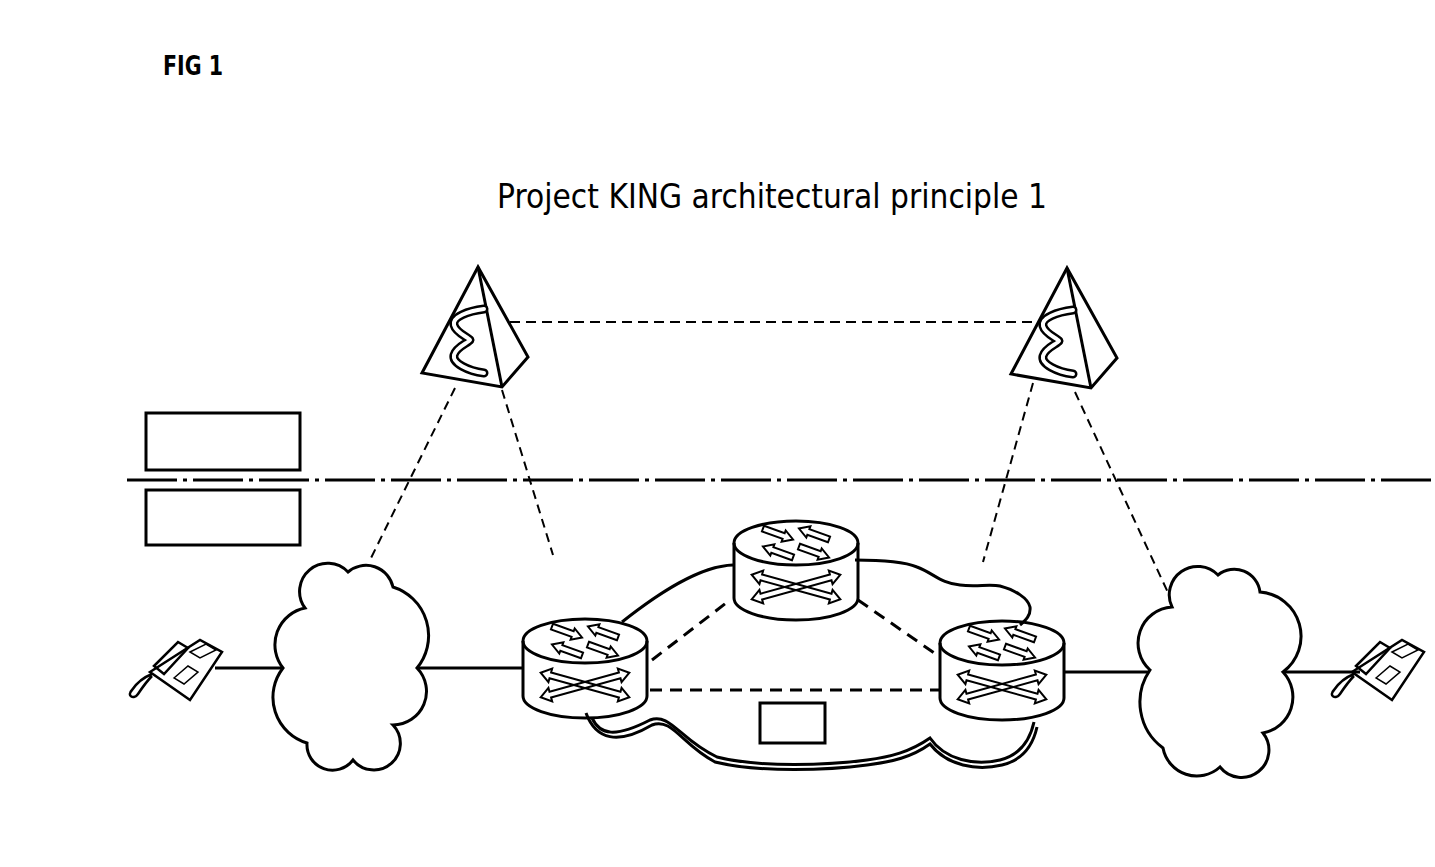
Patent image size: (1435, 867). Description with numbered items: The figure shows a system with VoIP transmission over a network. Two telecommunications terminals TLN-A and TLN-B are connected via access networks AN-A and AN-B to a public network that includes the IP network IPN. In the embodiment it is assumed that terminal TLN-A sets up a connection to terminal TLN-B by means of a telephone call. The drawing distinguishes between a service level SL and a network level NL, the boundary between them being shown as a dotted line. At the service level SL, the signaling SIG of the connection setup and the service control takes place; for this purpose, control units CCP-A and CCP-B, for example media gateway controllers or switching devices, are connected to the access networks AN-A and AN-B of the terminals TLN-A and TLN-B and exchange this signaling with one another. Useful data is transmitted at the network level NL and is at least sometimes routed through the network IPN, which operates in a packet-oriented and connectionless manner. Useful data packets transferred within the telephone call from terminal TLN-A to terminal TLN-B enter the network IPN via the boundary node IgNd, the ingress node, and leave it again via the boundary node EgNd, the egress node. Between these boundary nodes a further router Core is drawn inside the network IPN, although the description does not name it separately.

The service level SL is at (223, 441).
The network level NL is at (223, 517).
The call control point CCP-A is at (491, 322).
The call control point CCP-B is at (1080, 323).
The signaling SIG is at (772, 304).
The telecommunications terminal TLN-A is at (176, 685).
The telecommunications terminal TLN-B is at (1378, 690).
The access network AN-A is at (351, 666).
The access network AN-B is at (1219, 671).
The IP network IPN is at (811, 665).
The ingress node IgNd is at (585, 686).
The egress node EgNd is at (1016, 689).
The core router Core is at (796, 570).